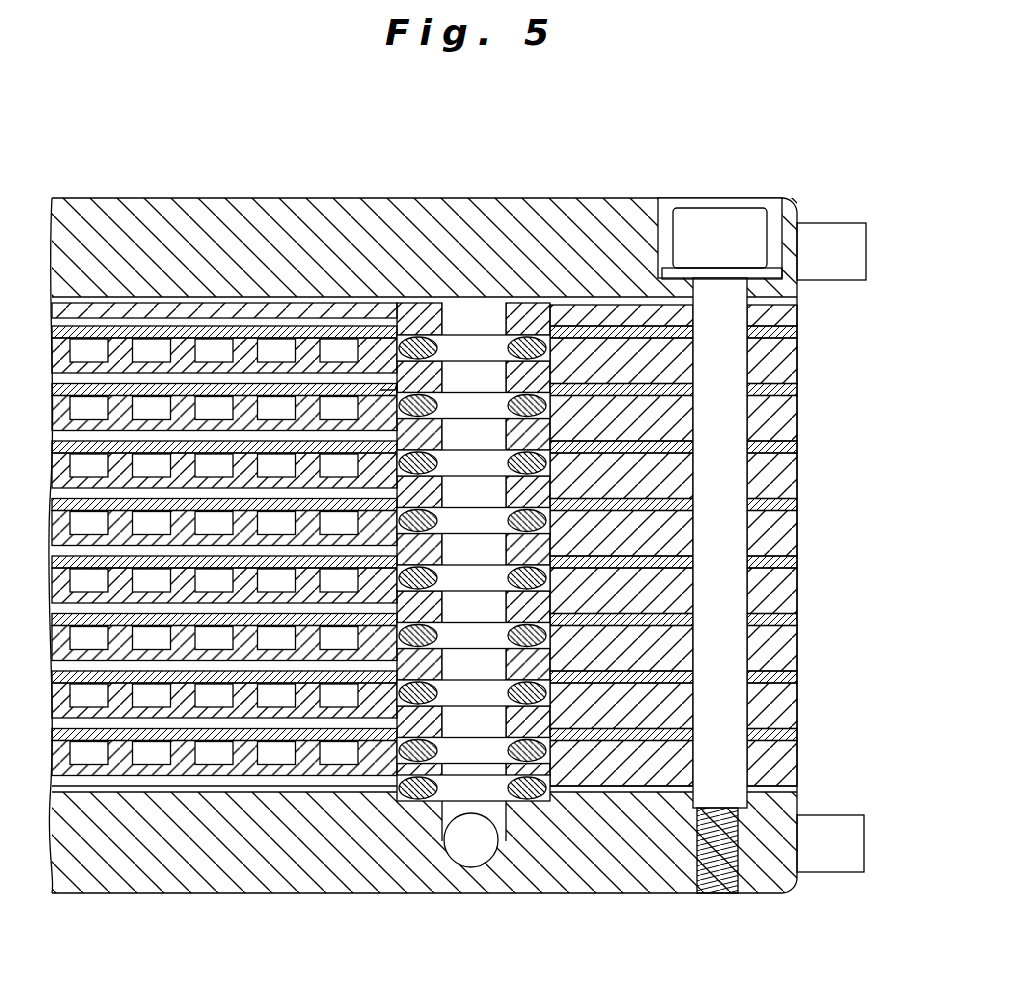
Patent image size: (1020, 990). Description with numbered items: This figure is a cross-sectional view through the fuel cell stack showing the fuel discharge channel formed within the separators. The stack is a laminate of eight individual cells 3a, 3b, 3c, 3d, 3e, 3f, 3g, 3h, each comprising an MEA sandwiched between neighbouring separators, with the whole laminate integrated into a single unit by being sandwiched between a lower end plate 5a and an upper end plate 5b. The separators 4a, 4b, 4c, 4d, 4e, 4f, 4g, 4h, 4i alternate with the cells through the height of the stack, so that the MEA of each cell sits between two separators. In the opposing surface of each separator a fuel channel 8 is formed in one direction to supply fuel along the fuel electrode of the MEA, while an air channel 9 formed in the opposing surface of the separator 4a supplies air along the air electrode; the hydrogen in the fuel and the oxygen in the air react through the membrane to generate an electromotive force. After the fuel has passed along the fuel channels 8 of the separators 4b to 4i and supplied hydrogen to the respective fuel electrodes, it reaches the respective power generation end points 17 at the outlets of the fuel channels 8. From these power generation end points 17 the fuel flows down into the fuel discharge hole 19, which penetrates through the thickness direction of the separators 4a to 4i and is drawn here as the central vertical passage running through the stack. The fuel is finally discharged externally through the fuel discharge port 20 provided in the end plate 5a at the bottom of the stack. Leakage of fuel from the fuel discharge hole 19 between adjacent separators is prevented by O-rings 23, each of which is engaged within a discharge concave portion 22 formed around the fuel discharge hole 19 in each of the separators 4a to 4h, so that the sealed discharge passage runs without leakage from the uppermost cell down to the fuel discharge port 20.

The cell 3a is at (803, 734).
The cell 3b is at (803, 677).
The cell 3c is at (803, 619).
The cell 3d is at (803, 562).
The cell 3e is at (803, 504).
The cell 3f is at (803, 447).
The cell 3g is at (803, 391).
The cell 3h is at (803, 334).
The separator 4a is at (790, 779).
The separator 4b is at (790, 714).
The separator 4c is at (790, 657).
The separator 4d is at (790, 600).
The separator 4e is at (790, 543).
The separator 4f is at (790, 487).
The separator 4g is at (790, 430).
The separator 4h is at (752, 372).
The separator 4i is at (790, 323).
The end plate 5a is at (303, 880).
The end plate 5b is at (433, 222).
The fuel channel 8 is at (233, 323).
The air channel 9 is at (247, 378).
The power generation end point 17 is at (393, 383).
The fuel discharge hole 19 is at (503, 373).
The fuel discharge port 20 is at (478, 860).
The discharge concave portion 22 is at (560, 365).
The O-ring 23 is at (528, 345).